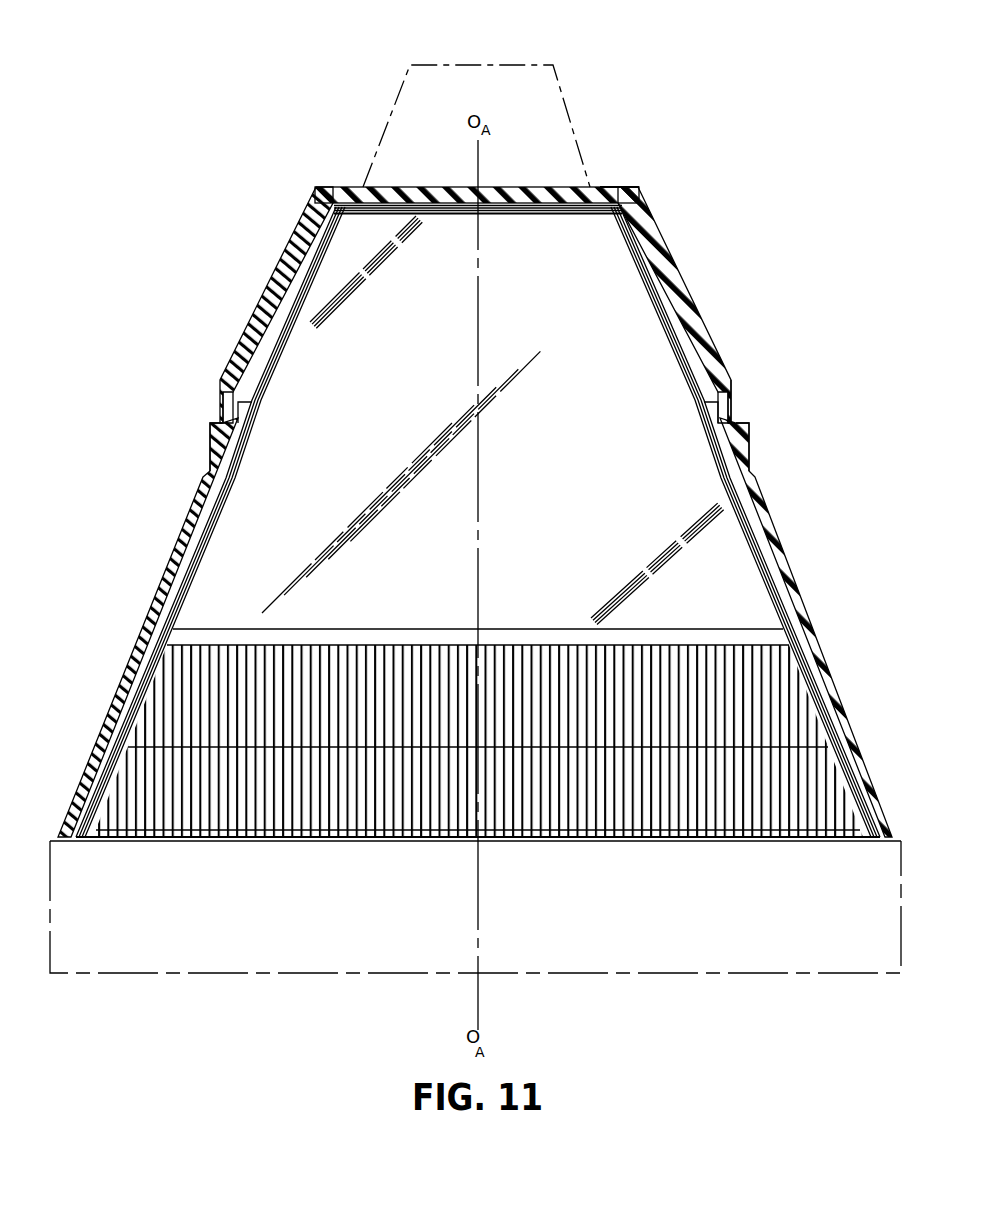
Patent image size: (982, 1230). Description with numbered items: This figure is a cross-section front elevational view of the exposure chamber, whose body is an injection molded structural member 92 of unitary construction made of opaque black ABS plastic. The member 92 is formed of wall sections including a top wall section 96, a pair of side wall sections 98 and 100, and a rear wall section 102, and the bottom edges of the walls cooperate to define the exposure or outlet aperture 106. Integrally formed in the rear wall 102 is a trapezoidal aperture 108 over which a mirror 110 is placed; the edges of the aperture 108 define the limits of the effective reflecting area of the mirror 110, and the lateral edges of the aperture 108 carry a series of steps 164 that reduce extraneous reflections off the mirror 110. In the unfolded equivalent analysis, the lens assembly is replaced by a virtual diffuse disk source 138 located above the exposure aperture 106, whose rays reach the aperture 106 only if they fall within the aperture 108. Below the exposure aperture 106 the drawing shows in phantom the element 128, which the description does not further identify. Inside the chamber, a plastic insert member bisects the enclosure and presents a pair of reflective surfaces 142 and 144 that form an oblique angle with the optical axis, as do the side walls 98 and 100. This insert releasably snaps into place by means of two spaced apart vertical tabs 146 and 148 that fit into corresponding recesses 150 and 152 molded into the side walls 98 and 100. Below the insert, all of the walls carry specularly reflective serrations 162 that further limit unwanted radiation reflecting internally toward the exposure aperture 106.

The structural member 92 is at (705, 309).
The top wall section 96 is at (600, 187).
The side wall section 98 is at (267, 322).
The side wall section 100 is at (730, 380).
The rear wall section 102 is at (622, 714).
The exposure aperture 106 is at (601, 843).
The trapezoidal aperture 108 is at (513, 222).
The mirror 110 is at (559, 488).
The base 128 is at (688, 976).
The equivalent disk source 138 is at (500, 65).
The reflective surface 142 is at (715, 408).
The reflective surface 144 is at (240, 410).
The vertical tab 146 is at (750, 430).
The vertical tab 148 is at (208, 424).
The recess 150 is at (727, 420).
The recess 152 is at (228, 421).
The serrations 162 is at (118, 712).
The steps 164 is at (303, 336).